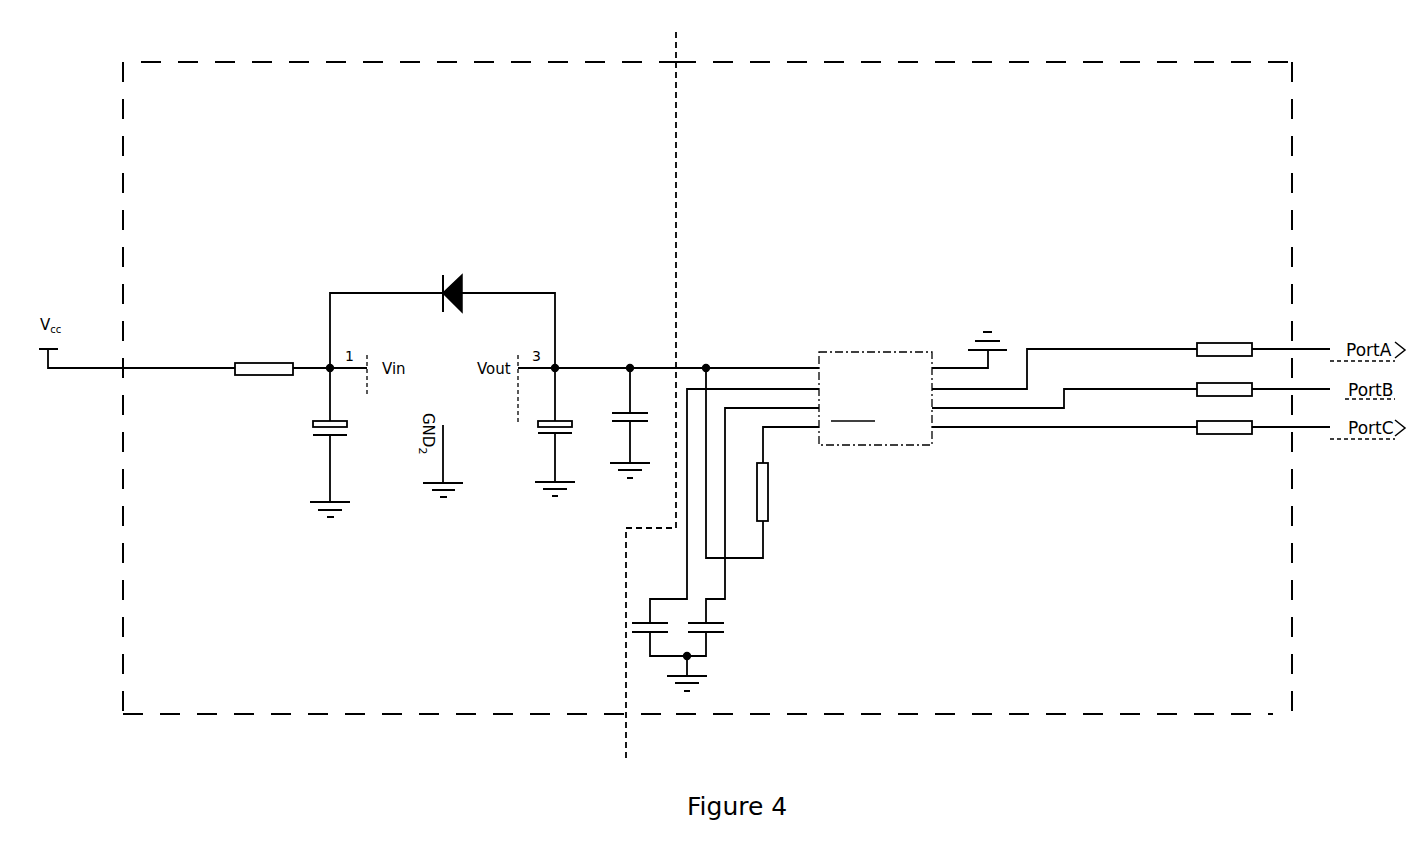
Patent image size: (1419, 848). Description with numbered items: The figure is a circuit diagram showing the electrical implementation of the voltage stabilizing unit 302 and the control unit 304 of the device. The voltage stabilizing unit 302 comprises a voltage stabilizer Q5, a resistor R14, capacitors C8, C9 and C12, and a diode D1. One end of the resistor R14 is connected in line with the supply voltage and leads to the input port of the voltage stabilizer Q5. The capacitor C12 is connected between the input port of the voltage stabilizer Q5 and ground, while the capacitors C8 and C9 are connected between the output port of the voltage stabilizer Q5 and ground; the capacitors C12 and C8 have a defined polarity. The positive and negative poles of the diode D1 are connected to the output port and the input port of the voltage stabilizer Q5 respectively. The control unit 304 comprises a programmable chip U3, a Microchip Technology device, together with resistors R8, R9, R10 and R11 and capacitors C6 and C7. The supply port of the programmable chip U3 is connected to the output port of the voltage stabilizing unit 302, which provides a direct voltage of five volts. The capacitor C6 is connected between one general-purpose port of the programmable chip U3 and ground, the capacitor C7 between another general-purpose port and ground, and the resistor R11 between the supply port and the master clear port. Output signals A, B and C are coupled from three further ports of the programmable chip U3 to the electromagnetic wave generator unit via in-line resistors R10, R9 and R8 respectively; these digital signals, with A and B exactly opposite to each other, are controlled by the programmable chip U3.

The voltage stabilizing unit 302 is at (399, 397).
The control unit 304 is at (984, 388).
The resistor R14 is at (282, 359).
The capacitor C12 is at (344, 442).
The diode D1 is at (453, 283).
The voltage stabilizer Q5 is at (442, 330).
The capacitor C8 is at (565, 432).
The capacitor C9 is at (640, 423).
The programmable chip U3 is at (877, 388).
The resistor R11 is at (762, 463).
The capacitor C6 is at (659, 636).
The capacitor C7 is at (716, 636).
The resistor R10 is at (1131, 357).
The resistor R9 is at (1131, 386).
The resistor R8 is at (1131, 418).